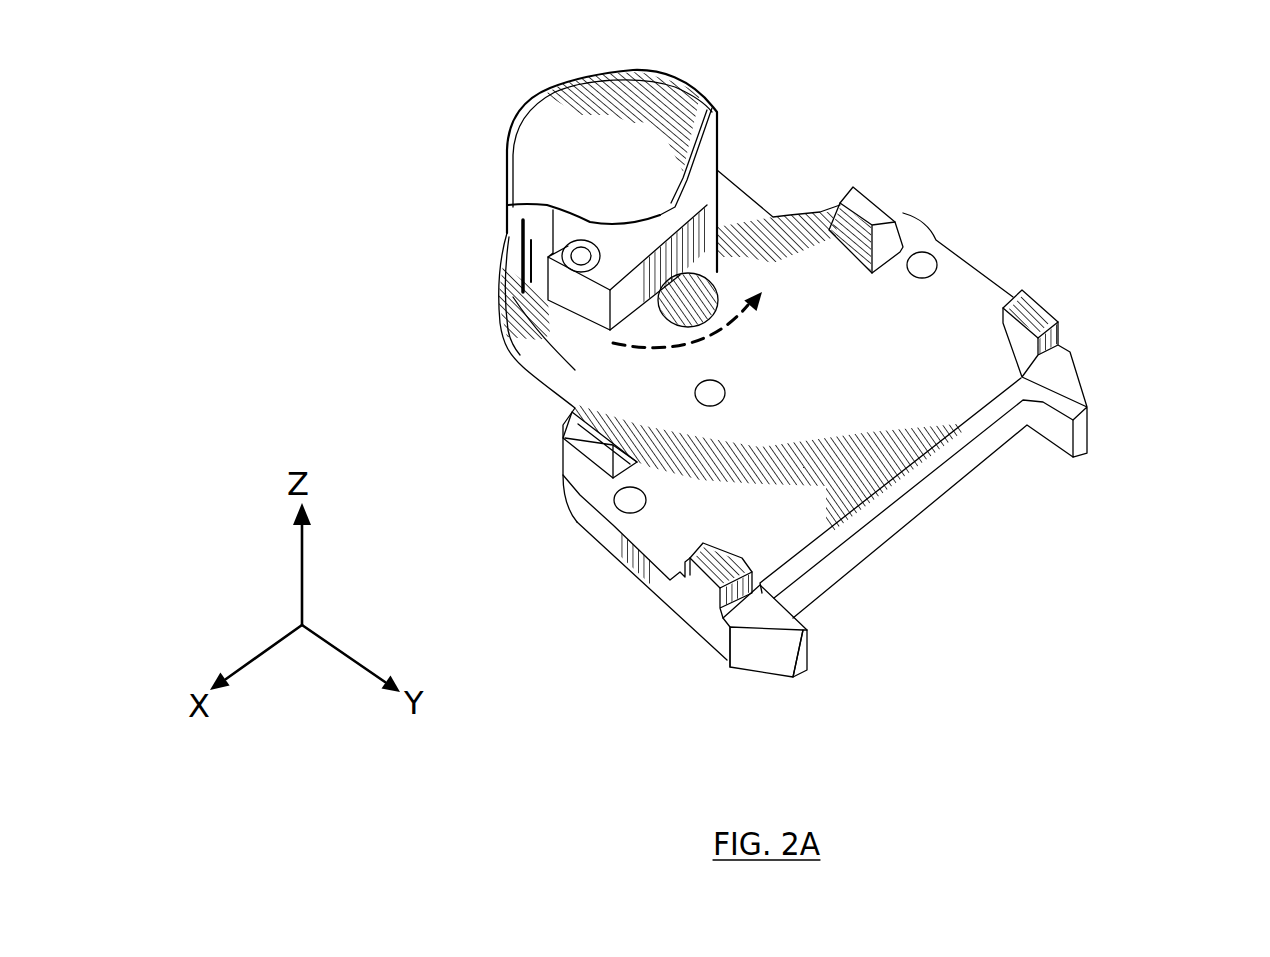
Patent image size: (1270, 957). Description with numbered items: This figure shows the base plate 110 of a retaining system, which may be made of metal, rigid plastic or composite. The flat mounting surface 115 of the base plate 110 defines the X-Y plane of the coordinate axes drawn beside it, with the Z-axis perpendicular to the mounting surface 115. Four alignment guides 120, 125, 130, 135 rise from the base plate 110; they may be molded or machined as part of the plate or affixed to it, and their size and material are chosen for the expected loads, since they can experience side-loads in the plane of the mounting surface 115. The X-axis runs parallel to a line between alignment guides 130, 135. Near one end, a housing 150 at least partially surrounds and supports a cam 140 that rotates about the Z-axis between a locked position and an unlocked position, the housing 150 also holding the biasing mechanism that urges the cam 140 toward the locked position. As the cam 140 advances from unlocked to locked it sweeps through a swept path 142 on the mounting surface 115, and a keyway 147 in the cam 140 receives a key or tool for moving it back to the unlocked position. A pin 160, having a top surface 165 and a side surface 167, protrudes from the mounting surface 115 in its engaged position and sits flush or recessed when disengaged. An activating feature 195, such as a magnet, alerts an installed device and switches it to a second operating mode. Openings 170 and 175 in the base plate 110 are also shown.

The base plate 110 is at (974, 167).
The mounting surface 115 is at (910, 338).
The alignment guide 120 is at (593, 442).
The alignment guide 125 is at (887, 213).
The alignment guide 130 is at (725, 573).
The alignment guide 135 is at (1027, 307).
The cam 140 is at (568, 298).
The swept path 142 is at (588, 386).
The keyway 147 is at (566, 256).
The housing 150 is at (543, 183).
The pin 160 is at (615, 338).
The top surface 165 is at (708, 297).
The side surface 167 is at (623, 343).
The mounting hole 170 is at (627, 503).
The mounting hole 175 is at (935, 260).
The activating feature 195 is at (727, 400).